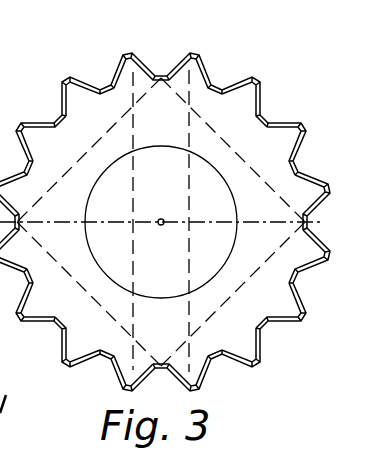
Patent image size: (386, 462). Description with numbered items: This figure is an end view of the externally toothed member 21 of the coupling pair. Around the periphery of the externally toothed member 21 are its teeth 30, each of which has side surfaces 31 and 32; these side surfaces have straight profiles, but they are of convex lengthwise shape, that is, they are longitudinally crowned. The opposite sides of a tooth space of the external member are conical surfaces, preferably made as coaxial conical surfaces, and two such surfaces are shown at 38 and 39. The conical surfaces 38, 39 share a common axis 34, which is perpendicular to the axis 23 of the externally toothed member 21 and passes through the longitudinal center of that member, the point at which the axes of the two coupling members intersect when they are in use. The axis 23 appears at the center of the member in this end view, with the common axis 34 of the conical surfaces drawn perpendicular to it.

The externally toothed member 21 is at (290, 302).
The axis of the external member 23 is at (163, 219).
The teeth 30 is at (167, 210).
The side surface 31 is at (143, 64).
The side surface 32 is at (190, 56).
The common axis 34 is at (104, 222).
The conical surface 38 is at (231, 136).
The conical surface 39 is at (97, 152).